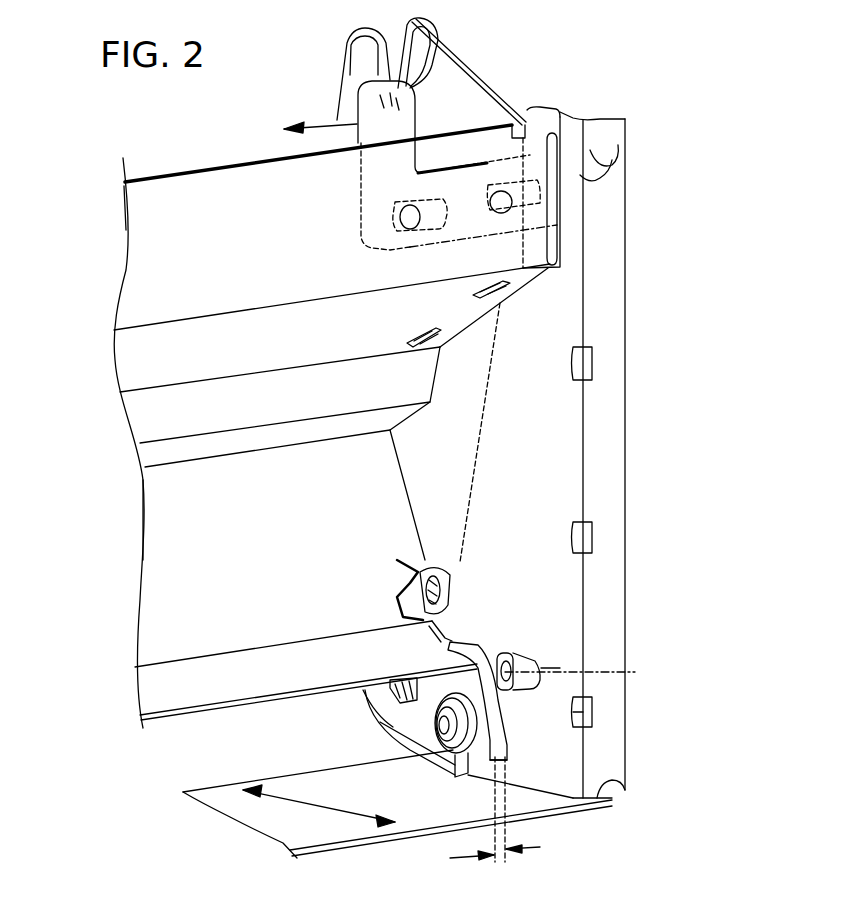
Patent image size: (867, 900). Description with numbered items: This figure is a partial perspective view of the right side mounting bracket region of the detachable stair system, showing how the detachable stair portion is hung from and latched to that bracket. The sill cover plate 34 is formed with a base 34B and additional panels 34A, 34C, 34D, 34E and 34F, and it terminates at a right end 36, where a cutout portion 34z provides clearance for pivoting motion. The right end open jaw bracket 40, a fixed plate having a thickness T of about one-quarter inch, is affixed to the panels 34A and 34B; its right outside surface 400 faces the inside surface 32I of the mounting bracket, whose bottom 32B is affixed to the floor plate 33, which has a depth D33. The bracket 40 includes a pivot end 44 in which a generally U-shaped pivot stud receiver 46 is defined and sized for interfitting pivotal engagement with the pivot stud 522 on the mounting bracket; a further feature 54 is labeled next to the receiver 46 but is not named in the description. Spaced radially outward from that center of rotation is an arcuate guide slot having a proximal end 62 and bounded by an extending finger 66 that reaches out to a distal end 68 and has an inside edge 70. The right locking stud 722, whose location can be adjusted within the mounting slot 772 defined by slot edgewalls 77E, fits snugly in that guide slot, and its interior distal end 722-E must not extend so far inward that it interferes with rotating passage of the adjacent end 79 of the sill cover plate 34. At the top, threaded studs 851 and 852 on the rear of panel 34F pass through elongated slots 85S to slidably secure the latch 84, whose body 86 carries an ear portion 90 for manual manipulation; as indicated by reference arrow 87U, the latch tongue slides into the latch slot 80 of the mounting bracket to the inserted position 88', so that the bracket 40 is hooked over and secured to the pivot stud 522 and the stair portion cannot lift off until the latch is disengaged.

The sill cover plate 34 is at (249, 565).
The panel 34A is at (150, 692).
The sill cover plate base 34B is at (153, 570).
The panel 34C is at (143, 458).
The panel 34D is at (133, 418).
The panel 34E is at (133, 360).
The panel 34F is at (143, 265).
The cutout portion 34z is at (388, 589).
The right end 36 is at (410, 513).
The latch slot 80 is at (572, 252).
The latch 84 is at (417, 118).
The body 86 is at (367, 110).
The reference arrow 87U is at (318, 125).
The tongue position 88' is at (624, 159).
The ear portion 90 is at (428, 50).
The threaded stud 851 is at (494, 190).
The threaded stud 852 is at (392, 222).
The elongated slots 85S is at (637, 195).
The inside surface 32I is at (560, 504).
The bottom 32B is at (622, 783).
The distal end 68 is at (455, 570).
The extending finger 66 is at (448, 592).
The inside edge 70 is at (447, 622).
The edge 79 is at (410, 622).
The right locking stud 722 is at (520, 657).
The mounting slot 772 is at (560, 660).
The interior distal end 722-E is at (596, 680).
The slot edgewalls 77E is at (575, 712).
The pivot stud receiver 46 is at (438, 700).
The bracket tab 54 is at (400, 693).
The proximal end 62 is at (388, 690).
The pivot stud 522 is at (440, 722).
The right end open jaw bracket 40 is at (443, 762).
The right outside surface 400 is at (507, 710).
The pivot end 44 is at (505, 768).
The floor plate 33 is at (320, 836).
The depth D33 is at (313, 800).
The thickness T is at (508, 809).